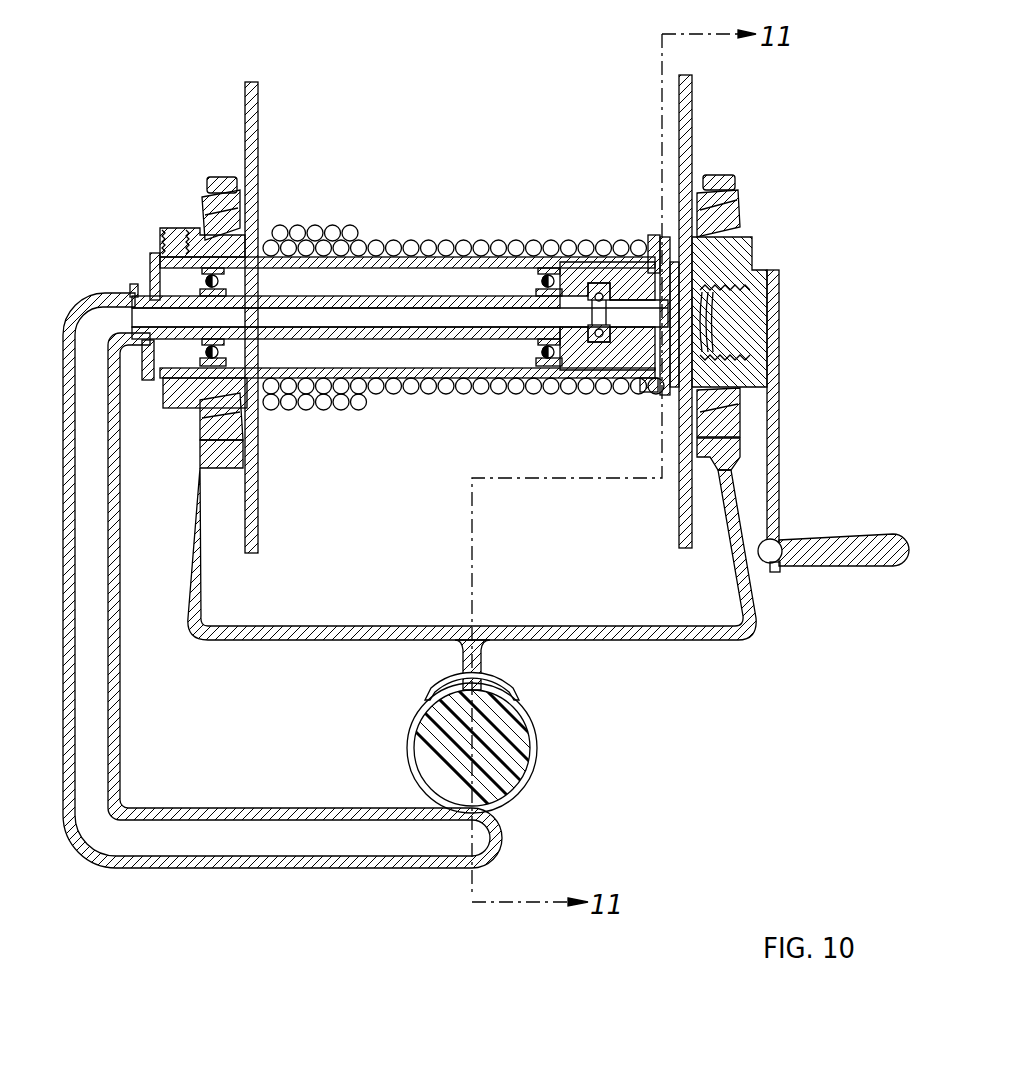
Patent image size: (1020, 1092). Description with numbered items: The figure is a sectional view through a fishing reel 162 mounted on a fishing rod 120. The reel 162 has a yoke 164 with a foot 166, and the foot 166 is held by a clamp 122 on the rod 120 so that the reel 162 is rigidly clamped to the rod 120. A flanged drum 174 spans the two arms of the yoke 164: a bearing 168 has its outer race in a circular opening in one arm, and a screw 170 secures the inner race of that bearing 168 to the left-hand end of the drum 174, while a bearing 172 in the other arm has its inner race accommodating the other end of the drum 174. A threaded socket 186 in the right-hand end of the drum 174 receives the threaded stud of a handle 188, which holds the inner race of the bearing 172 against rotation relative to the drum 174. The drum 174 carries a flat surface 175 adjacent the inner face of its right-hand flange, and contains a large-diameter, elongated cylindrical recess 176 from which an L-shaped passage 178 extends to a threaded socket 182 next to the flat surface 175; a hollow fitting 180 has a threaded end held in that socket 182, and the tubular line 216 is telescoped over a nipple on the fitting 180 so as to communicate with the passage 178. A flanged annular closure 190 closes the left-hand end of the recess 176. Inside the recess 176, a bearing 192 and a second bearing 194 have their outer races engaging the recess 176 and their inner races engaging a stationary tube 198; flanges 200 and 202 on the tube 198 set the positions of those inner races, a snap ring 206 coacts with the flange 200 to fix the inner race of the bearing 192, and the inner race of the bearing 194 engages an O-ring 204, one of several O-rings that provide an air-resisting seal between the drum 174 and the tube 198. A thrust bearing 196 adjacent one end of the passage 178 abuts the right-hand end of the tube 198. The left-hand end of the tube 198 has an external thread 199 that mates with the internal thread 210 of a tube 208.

The fishing rod 120 is at (505, 775).
The clamp 122 is at (508, 688).
The fishing reel 162 is at (452, 175).
The yoke 164 is at (235, 178).
The foot 166 is at (440, 690).
The bearing 168 is at (205, 235).
The screw 170 is at (182, 235).
The bearing 172 is at (740, 238).
The flanged drum 174 is at (258, 180).
The flat surface 175 is at (640, 268).
The cylindrical recess 176 is at (446, 378).
The L-shaped passage 178 is at (653, 313).
The hollow fitting 180 is at (668, 262).
The threaded socket 182 is at (700, 268).
The threaded socket 186 is at (738, 345).
The handle 188 is at (780, 345).
The flanged annular closure 190 is at (153, 290).
The bearing 192 is at (224, 278).
The second bearing 194 is at (540, 278).
The thrust bearing 196 is at (630, 393).
The stationary tube 198 is at (395, 295).
The external thread 199 is at (148, 342).
The flange 200 is at (224, 344).
The flange 202 is at (538, 344).
The O-ring 204 is at (578, 290).
The snap ring 206 is at (203, 345).
The tube 208 is at (290, 868).
The internal thread 210 is at (134, 292).
The tubular line 216 is at (340, 240).